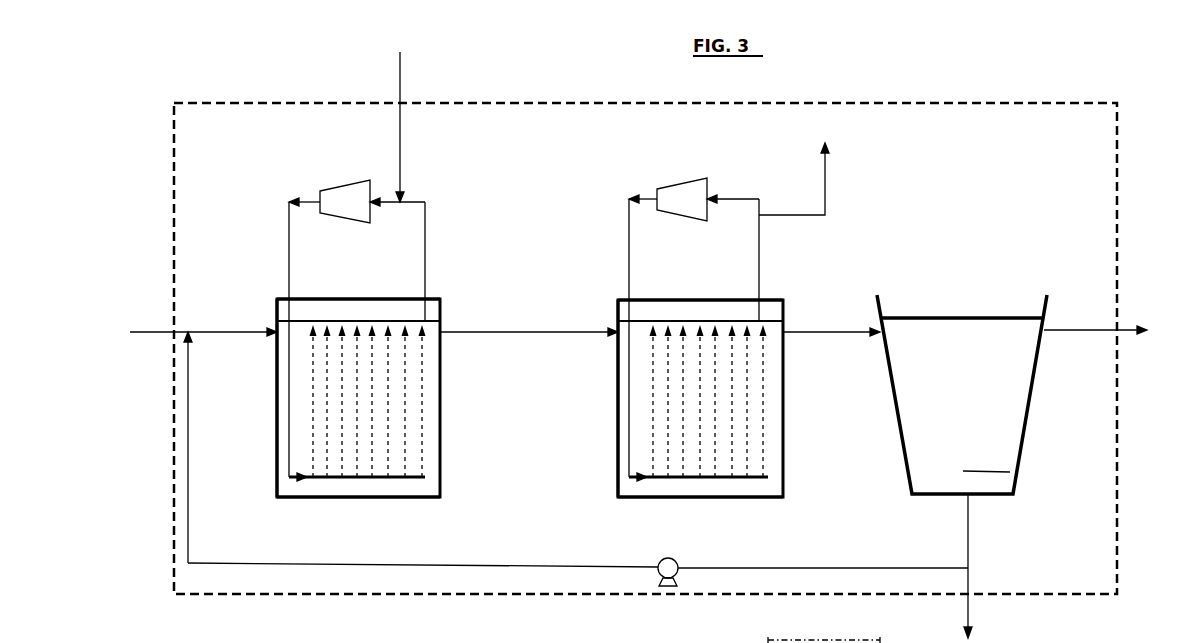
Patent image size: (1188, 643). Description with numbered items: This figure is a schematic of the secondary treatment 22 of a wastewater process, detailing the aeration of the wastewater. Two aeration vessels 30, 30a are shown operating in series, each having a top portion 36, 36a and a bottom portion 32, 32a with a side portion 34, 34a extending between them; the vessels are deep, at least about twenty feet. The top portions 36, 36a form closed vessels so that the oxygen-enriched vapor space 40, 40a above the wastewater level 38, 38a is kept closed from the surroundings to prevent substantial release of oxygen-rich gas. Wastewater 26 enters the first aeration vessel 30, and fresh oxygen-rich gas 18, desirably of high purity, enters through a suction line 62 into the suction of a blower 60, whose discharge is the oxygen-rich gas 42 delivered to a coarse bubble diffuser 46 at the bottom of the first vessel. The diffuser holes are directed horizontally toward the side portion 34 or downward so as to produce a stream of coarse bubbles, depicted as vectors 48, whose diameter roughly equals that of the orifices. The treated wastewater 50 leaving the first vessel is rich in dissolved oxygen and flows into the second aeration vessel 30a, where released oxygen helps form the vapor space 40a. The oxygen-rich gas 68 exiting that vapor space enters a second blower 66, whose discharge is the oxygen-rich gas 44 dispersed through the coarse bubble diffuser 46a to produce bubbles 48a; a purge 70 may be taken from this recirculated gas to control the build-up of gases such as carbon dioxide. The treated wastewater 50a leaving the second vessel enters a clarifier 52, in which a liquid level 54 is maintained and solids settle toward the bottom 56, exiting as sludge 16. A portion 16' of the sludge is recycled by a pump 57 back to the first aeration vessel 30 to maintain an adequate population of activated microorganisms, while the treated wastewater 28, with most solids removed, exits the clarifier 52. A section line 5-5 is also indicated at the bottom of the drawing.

The sludge 16 is at (1004, 567).
The portion of the sludge 16' is at (421, 449).
The oxygen-rich gas 18 is at (390, 71).
The secondary treatment 22 is at (990, 103).
The wastewater 26 is at (150, 332).
The treated wastewater 28 is at (1125, 330).
The aeration vessel 30 is at (440, 497).
The aeration vessel 30a is at (783, 497).
The bottom portion 32 is at (363, 497).
The bottom portion 32a is at (678, 497).
The side portion 34 is at (276, 412).
The side portion 34a is at (617, 415).
The top portion 36 is at (307, 302).
The top portion 36a is at (700, 302).
The wastewater level 38 is at (432, 318).
The wastewater level 38a is at (773, 327).
The vapor space 40 is at (387, 313).
The vapor space 40a is at (687, 313).
The oxygen-rich gas 42 is at (289, 253).
The oxygen-rich gas 44 is at (627, 280).
The coarse bubble diffuser 46 is at (424, 477).
The coarse bubble diffuser 46a is at (766, 477).
The gas bubbles 48 is at (404, 391).
The gas bubbles 48a is at (760, 414).
The treated wastewater 50 is at (560, 333).
The treated wastewater 50a is at (797, 333).
The clarifier 52 is at (1030, 406).
The liquid level 54 is at (955, 317).
The bottom of the clarifier 56 is at (1010, 472).
The pump 57 is at (660, 560).
The blower 60 is at (336, 180).
The suction line 62 is at (425, 252).
The blower 66 is at (670, 180).
The oxygen-rich gas 68 is at (724, 197).
The purge 70 is at (830, 177).
The section line 5-5 is at (774, 640).